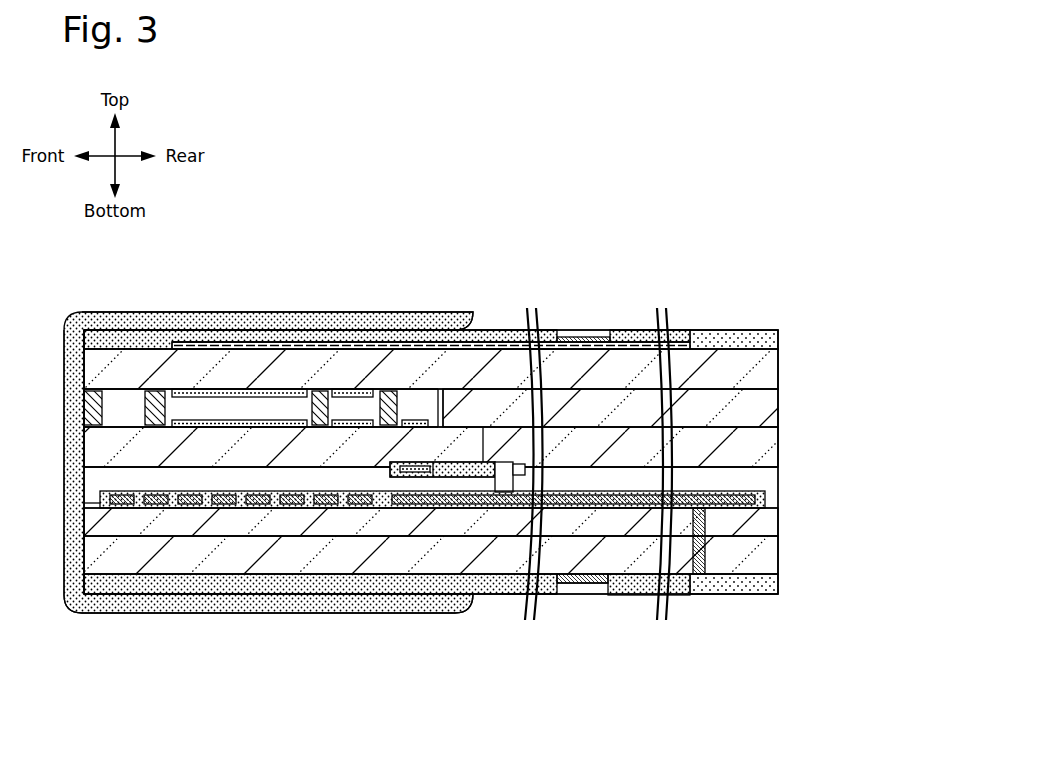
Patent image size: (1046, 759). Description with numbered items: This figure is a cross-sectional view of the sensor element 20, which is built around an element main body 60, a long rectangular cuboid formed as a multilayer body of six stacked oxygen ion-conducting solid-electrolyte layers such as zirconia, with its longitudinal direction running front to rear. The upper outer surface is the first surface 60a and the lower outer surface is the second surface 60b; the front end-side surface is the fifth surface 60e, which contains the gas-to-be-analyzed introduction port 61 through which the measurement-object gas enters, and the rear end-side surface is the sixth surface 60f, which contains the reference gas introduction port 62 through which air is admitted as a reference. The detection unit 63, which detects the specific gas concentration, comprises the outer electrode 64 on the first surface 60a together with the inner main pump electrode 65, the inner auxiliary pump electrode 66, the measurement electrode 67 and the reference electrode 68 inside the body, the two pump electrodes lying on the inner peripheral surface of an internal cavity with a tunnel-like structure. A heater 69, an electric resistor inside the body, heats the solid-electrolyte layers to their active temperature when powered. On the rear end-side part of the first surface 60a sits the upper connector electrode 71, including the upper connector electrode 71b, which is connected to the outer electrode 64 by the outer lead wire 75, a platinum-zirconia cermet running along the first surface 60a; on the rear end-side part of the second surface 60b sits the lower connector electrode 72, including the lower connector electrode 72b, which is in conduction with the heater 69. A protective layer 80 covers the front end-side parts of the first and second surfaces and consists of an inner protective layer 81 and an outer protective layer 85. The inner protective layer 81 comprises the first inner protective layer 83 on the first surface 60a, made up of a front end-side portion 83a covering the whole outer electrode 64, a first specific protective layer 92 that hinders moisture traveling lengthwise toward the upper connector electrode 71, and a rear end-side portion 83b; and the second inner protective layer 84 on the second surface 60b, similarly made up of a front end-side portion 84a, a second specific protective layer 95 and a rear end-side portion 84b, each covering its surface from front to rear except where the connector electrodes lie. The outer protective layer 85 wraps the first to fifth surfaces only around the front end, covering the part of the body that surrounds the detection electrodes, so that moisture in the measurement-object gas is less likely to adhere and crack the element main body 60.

The sensor element 20 is at (786, 170).
The element main body 60 is at (813, 385).
The first surface 60a is at (148, 345).
The second surface 60b is at (145, 578).
The fifth surface 60e is at (84, 480).
The sixth surface 60f is at (779, 469).
The gas-to-be-analyzed introduction port 61 is at (84, 406).
The reference gas introduction port 62 is at (779, 441).
The detection unit 63 is at (375, 239).
The outer electrode 64 is at (192, 389).
The inner main pump electrode 65 is at (250, 427).
The inner auxiliary pump electrode 66 is at (362, 422).
The measurement electrode 67 is at (412, 420).
The reference electrode 68 is at (436, 462).
The heater 69 is at (300, 500).
The upper connector electrode 71 is at (831, 312).
The upper connector electrode 71b is at (779, 336).
The lower connector electrode 72 is at (831, 541).
The lower connector electrode 72b is at (779, 574).
The outer lead wire 75 is at (684, 330).
The protective layer 80 is at (442, 181).
The inner protective layer 81 is at (508, 213).
The first inner protective layer 83 is at (640, 262).
The front end-side portion 83a is at (509, 330).
The rear end-side portion 83b is at (620, 330).
The second inner protective layer 84 is at (640, 655).
The front end-side portion 84a is at (527, 596).
The rear end-side portion 84b is at (612, 598).
The outer protective layer 85 is at (272, 312).
The first specific protective layer 92 is at (578, 337).
The second specific protective layer 95 is at (578, 584).